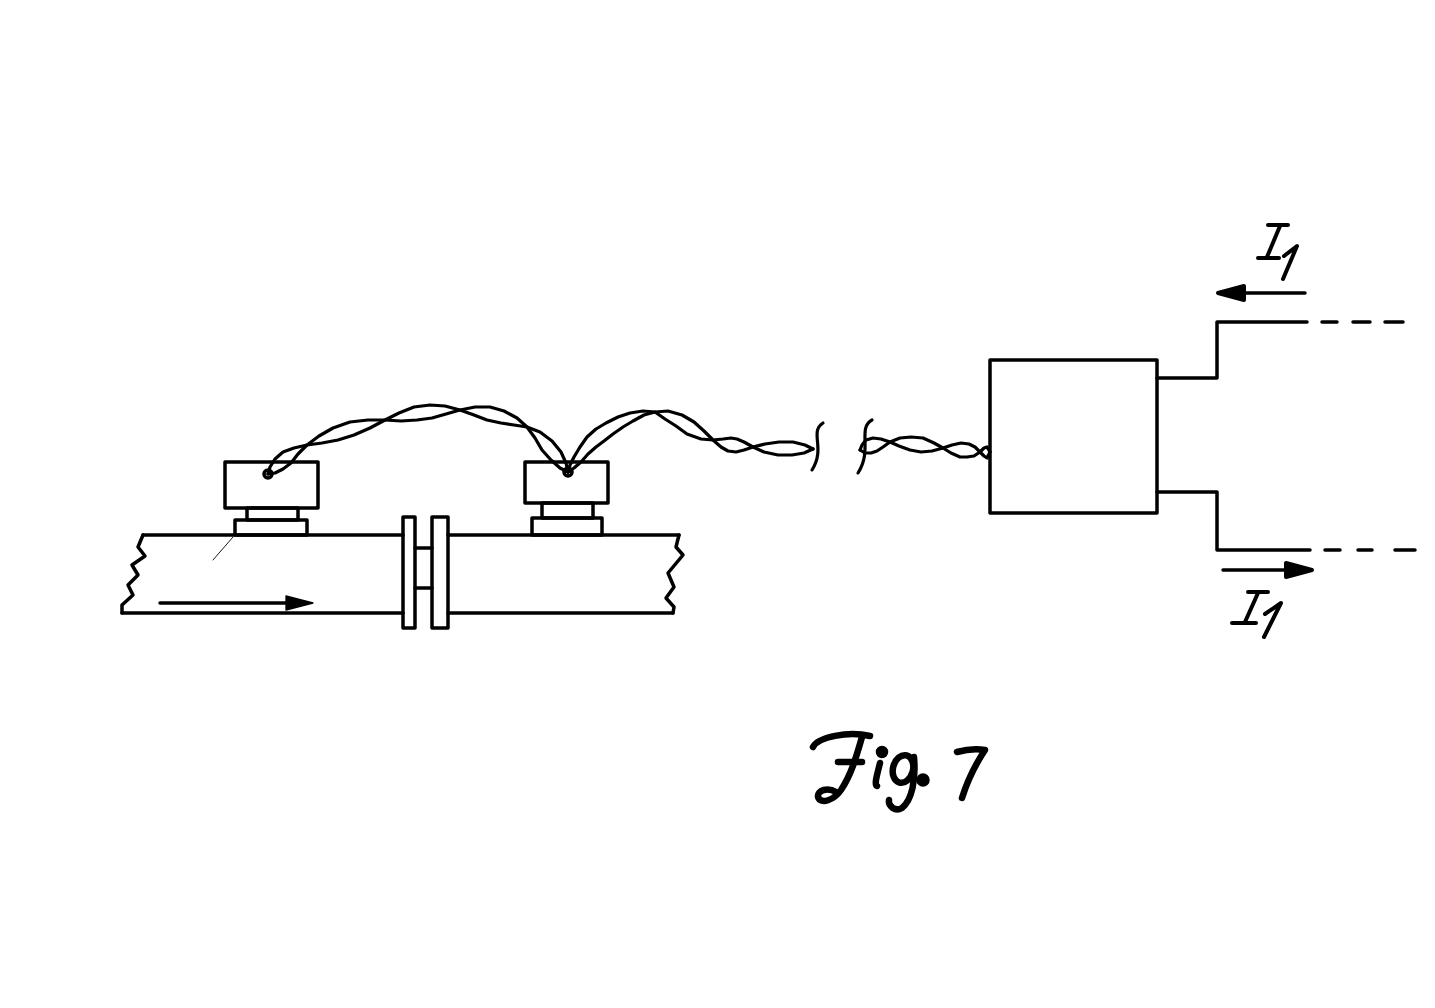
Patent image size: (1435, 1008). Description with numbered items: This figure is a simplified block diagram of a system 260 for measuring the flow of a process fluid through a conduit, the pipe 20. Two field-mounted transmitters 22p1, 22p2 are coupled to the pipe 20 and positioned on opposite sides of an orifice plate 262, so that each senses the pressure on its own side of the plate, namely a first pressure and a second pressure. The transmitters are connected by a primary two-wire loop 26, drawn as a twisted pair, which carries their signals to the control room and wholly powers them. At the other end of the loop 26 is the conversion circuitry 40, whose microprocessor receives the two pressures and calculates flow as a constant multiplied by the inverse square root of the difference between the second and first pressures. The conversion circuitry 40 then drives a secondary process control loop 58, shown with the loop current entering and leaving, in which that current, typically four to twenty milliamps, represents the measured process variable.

The flow measurement system 260 is at (904, 156).
The pipe 20 is at (190, 614).
The orifice plate 262 is at (423, 629).
The transmitter 22p2 is at (225, 478).
The transmitter 22p1 is at (608, 478).
The primary two-wire loop 26 is at (460, 410).
The conversion circuitry 40 is at (1097, 463).
The secondary process control loop 58 is at (1217, 353).